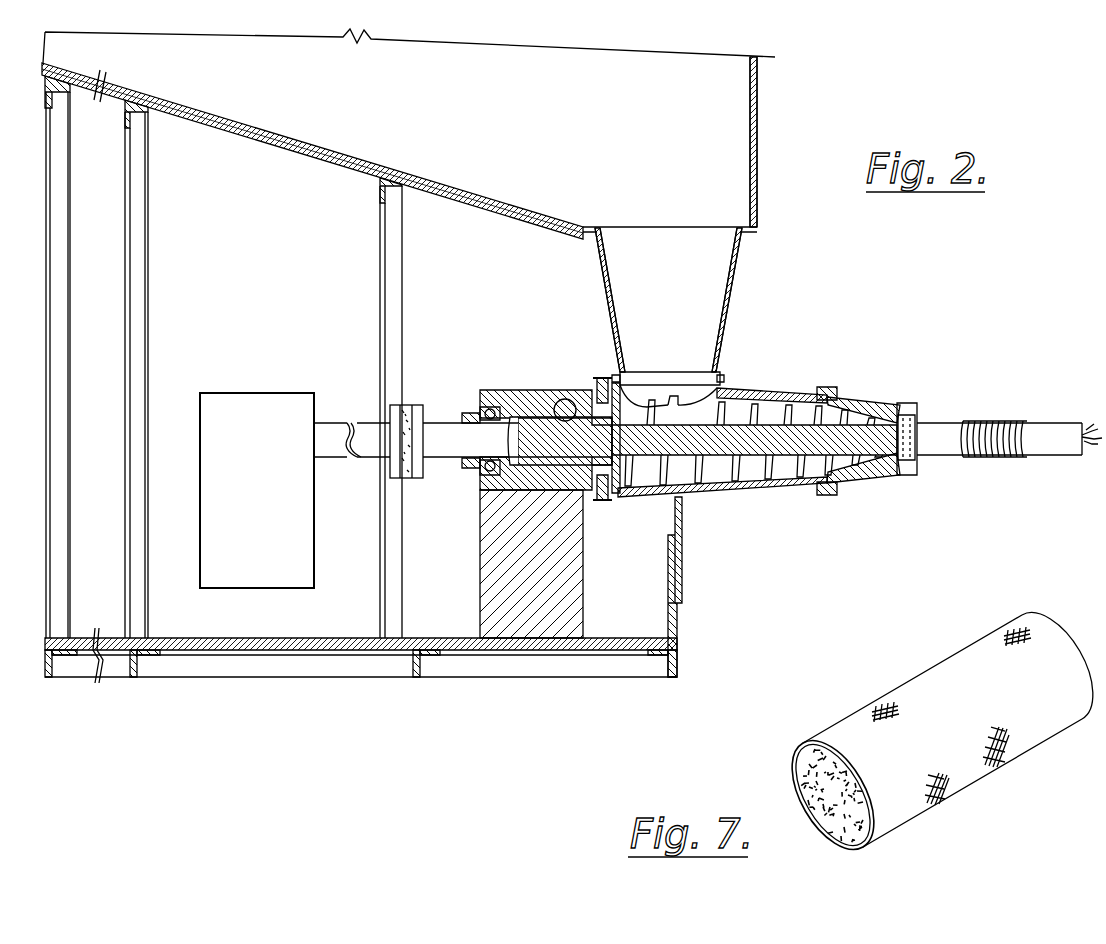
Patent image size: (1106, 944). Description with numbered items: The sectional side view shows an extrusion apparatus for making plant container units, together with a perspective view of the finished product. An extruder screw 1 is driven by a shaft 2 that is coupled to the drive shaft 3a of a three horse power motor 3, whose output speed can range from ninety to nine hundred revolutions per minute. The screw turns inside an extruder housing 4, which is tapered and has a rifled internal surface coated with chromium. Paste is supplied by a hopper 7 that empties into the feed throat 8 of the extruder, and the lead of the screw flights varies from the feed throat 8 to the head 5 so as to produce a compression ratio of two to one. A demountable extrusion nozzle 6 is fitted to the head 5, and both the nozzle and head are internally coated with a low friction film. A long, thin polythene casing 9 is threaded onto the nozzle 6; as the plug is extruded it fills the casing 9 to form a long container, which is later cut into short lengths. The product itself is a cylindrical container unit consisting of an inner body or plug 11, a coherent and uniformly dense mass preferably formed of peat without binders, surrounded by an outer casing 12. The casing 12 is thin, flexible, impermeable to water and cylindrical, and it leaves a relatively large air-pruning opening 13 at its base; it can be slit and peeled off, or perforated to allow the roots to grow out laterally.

In FIG. 2, the extruder screw 1 is at (798, 433).
In FIG. 2, the shaft 2 is at (443, 433).
In FIG. 2, the motor 3 is at (240, 410).
In FIG. 2, the drive shaft 3a is at (372, 437).
In FIG. 2, the extruder housing 4 is at (750, 485).
In FIG. 2, the head 5 is at (877, 405).
In FIG. 2, the extrusion nozzle 6 is at (937, 448).
In FIG. 2, the hopper 7 is at (725, 182).
In FIG. 2, the feed throat 8 is at (690, 393).
In FIG. 2, the polythene casing 9 is at (987, 423).
In FIG. 7, the plug 11 is at (850, 807).
In FIG. 7, the outer casing 12 is at (987, 765).
In FIG. 7, the air-pruning opening 13 is at (800, 773).